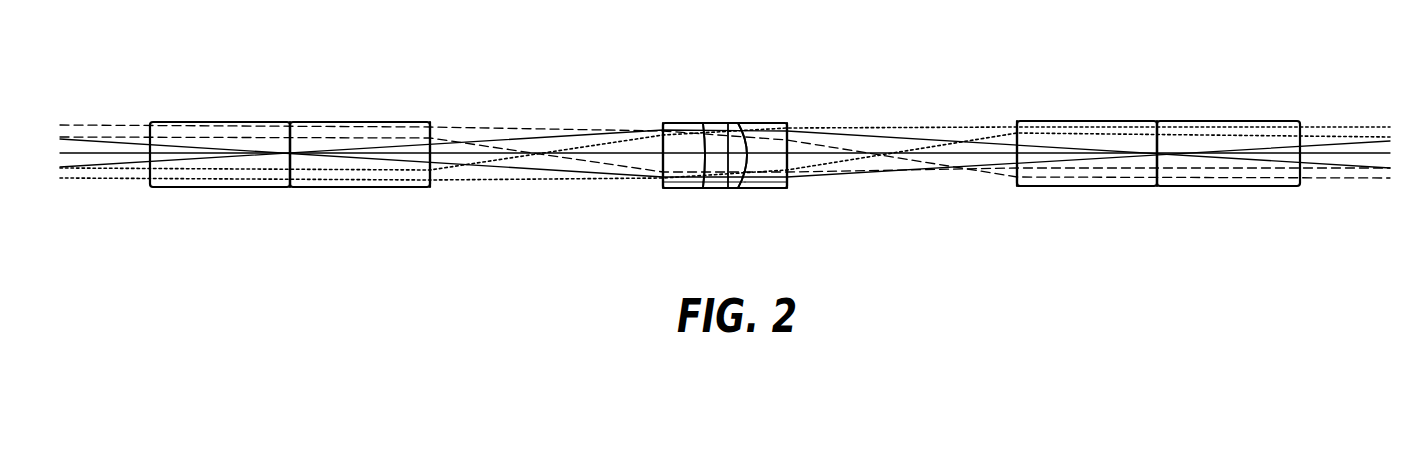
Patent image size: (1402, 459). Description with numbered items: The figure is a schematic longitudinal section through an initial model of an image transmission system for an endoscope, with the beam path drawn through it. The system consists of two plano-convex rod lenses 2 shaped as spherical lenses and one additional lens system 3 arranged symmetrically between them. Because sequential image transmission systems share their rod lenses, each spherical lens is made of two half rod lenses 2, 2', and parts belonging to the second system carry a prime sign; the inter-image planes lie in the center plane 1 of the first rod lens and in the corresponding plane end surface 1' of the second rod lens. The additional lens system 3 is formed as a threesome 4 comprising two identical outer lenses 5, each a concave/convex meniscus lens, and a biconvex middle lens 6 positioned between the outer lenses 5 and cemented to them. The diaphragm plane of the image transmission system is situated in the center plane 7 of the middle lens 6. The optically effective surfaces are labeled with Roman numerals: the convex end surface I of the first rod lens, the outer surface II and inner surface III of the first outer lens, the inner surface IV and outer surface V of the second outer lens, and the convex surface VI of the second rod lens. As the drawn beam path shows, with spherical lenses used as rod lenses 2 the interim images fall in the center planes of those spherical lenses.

The center plane 1 is at (305, 195).
The plane end surface of the second rod lens 1' is at (1157, 203).
The rod lens 2 is at (723, 210).
The rod lens 2' is at (725, 213).
The additional lens system 3 is at (724, 161).
The threesome 4 is at (641, 209).
The outer lens 5 is at (692, 190).
The middle lens 6 is at (717, 190).
The center plane of the middle lens 7 is at (735, 190).
The convex end surface of the first rod lens I is at (430, 125).
The outer surface of the first outer lens II is at (660, 130).
The inner surface of the first outer lens III is at (702, 130).
The inner surface of the second outer lens IV is at (745, 135).
The outer surface of the second outer lens V is at (783, 130).
The convex surface of the second rod lens VI is at (1017, 130).